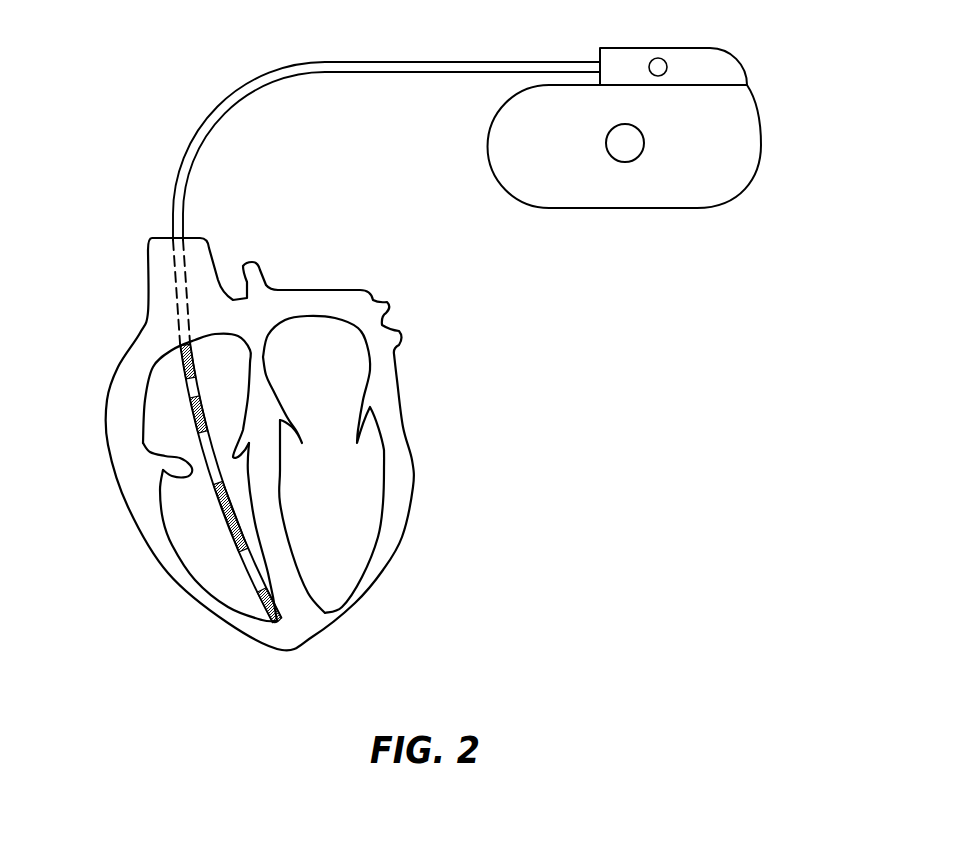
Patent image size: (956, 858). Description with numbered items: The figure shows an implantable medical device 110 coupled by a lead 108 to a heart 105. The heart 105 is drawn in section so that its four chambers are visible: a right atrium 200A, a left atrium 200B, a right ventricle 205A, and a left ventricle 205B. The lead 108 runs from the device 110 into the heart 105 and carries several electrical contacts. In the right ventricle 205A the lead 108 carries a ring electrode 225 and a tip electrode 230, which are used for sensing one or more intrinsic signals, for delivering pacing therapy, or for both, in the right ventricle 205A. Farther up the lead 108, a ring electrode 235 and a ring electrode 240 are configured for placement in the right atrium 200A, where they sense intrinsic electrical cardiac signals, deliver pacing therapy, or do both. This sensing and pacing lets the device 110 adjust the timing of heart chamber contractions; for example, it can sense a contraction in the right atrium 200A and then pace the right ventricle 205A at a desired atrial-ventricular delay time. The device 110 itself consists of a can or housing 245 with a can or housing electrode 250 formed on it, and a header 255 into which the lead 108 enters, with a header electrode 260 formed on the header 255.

The heart 105 is at (413, 430).
The lead 108 is at (220, 105).
The implantable medical device 110 is at (656, 104).
The right atrium 200A is at (163, 408).
The left atrium 200B is at (330, 395).
The right ventricle 205A is at (227, 565).
The left ventricle 205B is at (335, 514).
The ring electrode 225 is at (223, 518).
The tip electrode 230 is at (264, 606).
The ring electrode 235 is at (195, 413).
The ring electrode 240 is at (182, 362).
The can or housing 245 is at (762, 134).
The can or housing electrode 250 is at (645, 143).
The header 255 is at (741, 63).
The header electrode 260 is at (655, 58).